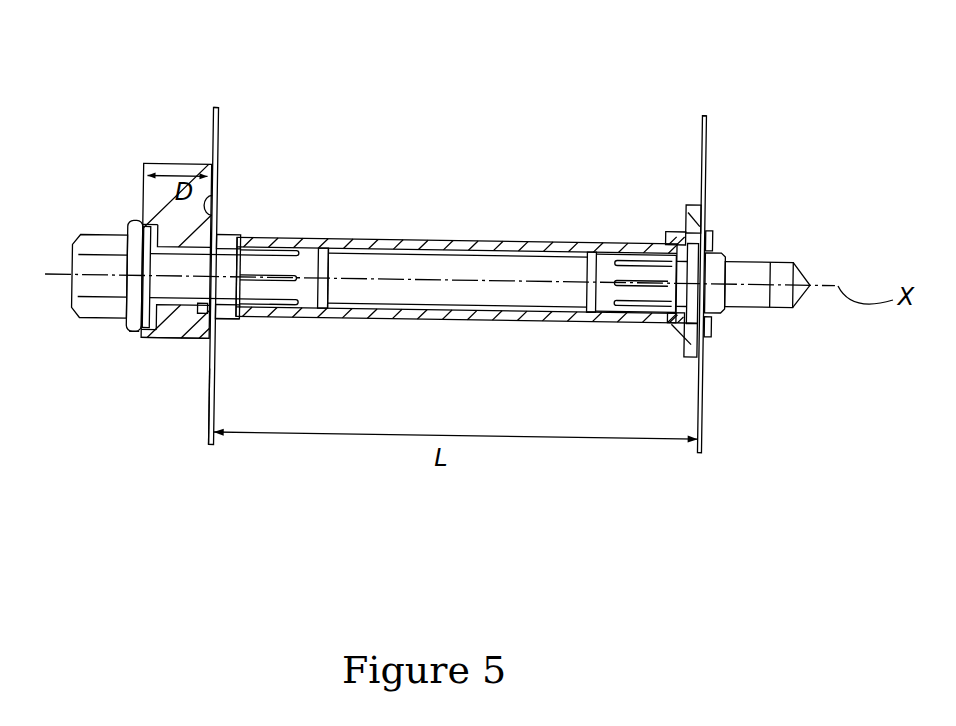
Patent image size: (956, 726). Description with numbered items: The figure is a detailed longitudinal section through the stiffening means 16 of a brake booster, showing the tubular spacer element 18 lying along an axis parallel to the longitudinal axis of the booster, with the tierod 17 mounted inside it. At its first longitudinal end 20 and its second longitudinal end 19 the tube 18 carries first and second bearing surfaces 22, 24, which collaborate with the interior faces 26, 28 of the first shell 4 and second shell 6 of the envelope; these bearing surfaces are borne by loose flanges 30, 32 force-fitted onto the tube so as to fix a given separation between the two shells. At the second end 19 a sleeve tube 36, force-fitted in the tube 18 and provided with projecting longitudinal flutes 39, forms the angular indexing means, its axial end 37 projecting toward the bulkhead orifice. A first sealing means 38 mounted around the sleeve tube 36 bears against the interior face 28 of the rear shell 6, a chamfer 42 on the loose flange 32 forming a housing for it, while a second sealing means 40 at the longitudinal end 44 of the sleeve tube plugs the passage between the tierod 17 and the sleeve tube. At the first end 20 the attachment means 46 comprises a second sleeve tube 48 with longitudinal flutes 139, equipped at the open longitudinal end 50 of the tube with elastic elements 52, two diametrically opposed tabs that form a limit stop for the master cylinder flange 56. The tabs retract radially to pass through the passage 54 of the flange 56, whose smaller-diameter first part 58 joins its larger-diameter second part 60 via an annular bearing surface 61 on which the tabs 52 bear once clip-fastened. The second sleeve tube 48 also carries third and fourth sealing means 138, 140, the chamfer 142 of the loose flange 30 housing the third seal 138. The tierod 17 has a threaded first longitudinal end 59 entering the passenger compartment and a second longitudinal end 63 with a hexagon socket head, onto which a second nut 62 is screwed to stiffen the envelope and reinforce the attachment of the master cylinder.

The first shell 4 is at (218, 124).
The second shell 6 is at (708, 124).
The stiffening means 16 is at (470, 230).
The tierod 17 is at (389, 292).
The spacer element 18 is at (490, 318).
The second longitudinal end 19 is at (668, 325).
The first longitudinal end 20 is at (259, 236).
The first bearing surface 22 is at (211, 198).
The second bearing surface 24 is at (701, 200).
The interior face of first shell 26 is at (218, 109).
The interior face of second shell 28 is at (705, 113).
The loose flange 30 is at (214, 372).
The loose flange 32 is at (690, 358).
The sleeve tube 36 is at (636, 250).
The axial end 37 is at (723, 323).
The first sealing means 38 is at (700, 262).
The longitudinal flutes 39 is at (631, 306).
The second sealing means 40 is at (593, 241).
The chamfer 42 is at (710, 245).
The longitudinal end of sleeve tube 44 is at (593, 323).
The attachment means 46 is at (165, 228).
The second sleeve tube 48 is at (299, 240).
The open longitudinal end 50 is at (181, 334).
The elastic elements 52 is at (142, 333).
The passage 54 is at (125, 318).
The flange 56 is at (174, 166).
The first part 58 is at (203, 318).
The first longitudinal end 59 is at (768, 272).
The second part 60 is at (150, 232).
The annular bearing surface 61 is at (148, 242).
The second nut 62 is at (110, 306).
The second longitudinal end 63 is at (62, 292).
The third sealing means 138 is at (233, 235).
The longitudinal flutes 139 is at (289, 298).
The fourth sealing means 140 is at (327, 249).
The chamfer 142 is at (221, 330).